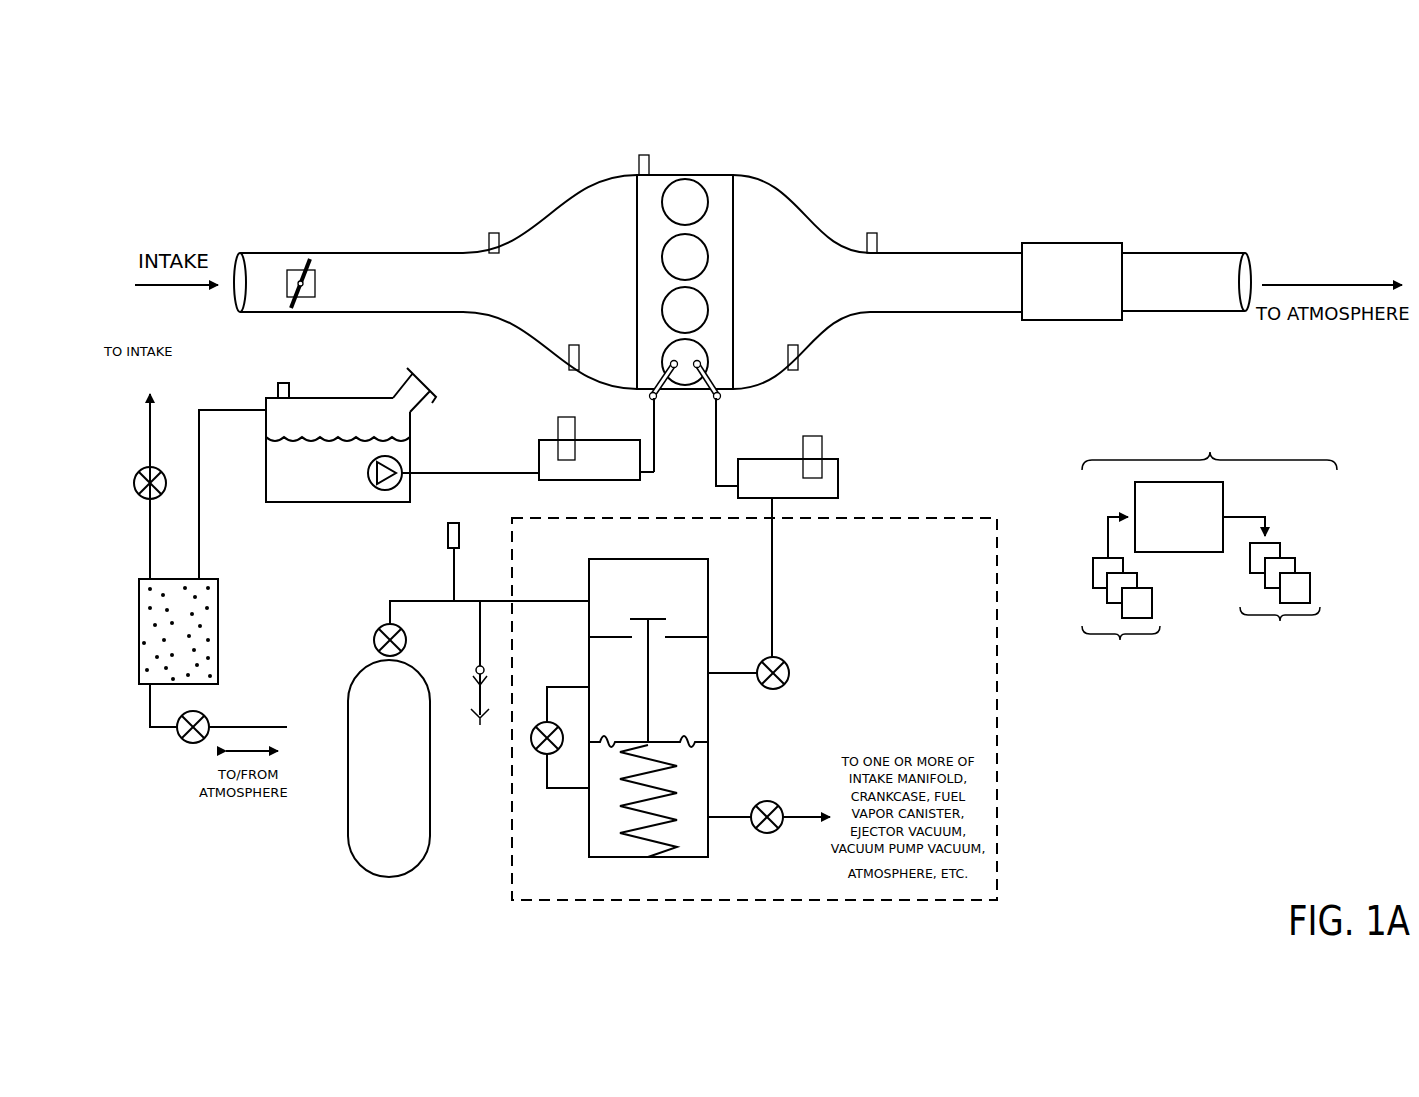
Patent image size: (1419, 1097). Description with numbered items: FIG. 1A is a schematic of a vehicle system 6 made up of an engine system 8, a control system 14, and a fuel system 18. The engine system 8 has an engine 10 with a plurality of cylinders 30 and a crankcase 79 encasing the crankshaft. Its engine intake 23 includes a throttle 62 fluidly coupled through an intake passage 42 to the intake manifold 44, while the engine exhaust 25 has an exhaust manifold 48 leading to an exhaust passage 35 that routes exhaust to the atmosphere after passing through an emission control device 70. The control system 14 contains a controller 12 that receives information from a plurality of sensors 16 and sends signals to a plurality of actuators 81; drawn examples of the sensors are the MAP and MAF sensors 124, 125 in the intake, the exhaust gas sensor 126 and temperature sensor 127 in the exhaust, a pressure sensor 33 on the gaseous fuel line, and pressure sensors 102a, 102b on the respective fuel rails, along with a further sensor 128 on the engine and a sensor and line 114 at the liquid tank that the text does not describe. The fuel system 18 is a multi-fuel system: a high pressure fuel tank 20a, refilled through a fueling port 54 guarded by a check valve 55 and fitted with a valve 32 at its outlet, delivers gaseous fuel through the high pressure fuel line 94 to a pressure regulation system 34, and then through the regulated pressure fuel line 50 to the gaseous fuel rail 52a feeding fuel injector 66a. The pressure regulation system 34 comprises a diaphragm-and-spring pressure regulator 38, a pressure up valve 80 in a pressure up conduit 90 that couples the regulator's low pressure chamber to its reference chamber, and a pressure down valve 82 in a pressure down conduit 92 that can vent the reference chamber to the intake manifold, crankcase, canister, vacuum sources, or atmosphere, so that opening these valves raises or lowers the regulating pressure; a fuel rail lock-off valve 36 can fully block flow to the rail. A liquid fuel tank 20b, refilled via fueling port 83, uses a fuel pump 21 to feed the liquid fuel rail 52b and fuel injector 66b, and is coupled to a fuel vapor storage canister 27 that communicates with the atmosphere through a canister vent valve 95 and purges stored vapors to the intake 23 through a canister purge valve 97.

The vehicle system 6 is at (188, 132).
The engine system 8 is at (858, 141).
The engine 10 is at (722, 160).
The controller 12 is at (1179, 517).
The control system 14 is at (1209, 438).
The sensors 16 is at (1122, 598).
The fuel system 18 is at (219, 858).
The high pressure fuel tank 20a is at (389, 768).
The fuel tank 20b is at (266, 466).
The fuel pump 21 is at (368, 473).
The engine intake 23 is at (440, 232).
The engine exhaust 25 is at (1083, 190).
The fuel vapor storage canister 27 is at (139, 626).
The cylinders 30 is at (703, 198).
The tank valve 32 is at (374, 640).
The pressure sensor 33 is at (454, 523).
The pressure regulation system 34 is at (866, 518).
The exhaust passage 35 is at (1198, 253).
The fuel rail lock-off valve 36 is at (785, 660).
The pressure regulator 38 is at (738, 731).
The intake passage 42 is at (348, 313).
The intake manifold 44 is at (594, 283).
The exhaust manifold 48 is at (801, 283).
The regulated pressure fuel line 50 is at (772, 568).
The fuel rail 52a is at (788, 558).
The fuel rail 52b is at (528, 460).
The fueling port 54 is at (475, 720).
The check valve 55 is at (476, 666).
The throttle 62 is at (315, 290).
The fuel injector 66a is at (719, 395).
The fuel injector 66b is at (652, 395).
The emission control device 70 is at (1072, 281).
The crankcase 79 is at (733, 276).
The pressure up valve 80 is at (534, 750).
The actuators 81 is at (1276, 589).
The pressure down valve 82 is at (775, 802).
The fueling port 83 is at (418, 382).
The pressure up conduit 90 is at (568, 687).
The pressure down conduit 92 is at (722, 820).
The high pressure fuel line 94 is at (538, 600).
The canister vent valve 95 is at (180, 742).
The canister purge valve 97 is at (137, 493).
The pressure sensor 102a is at (815, 436).
The pressure sensor 102b is at (566, 417).
The vapor line / sensor 114 is at (279, 388).
The MAP sensor 124 is at (499, 244).
The MAF sensor 125 is at (569, 351).
The exhaust gas sensor 126 is at (798, 352).
The temperature sensor 127 is at (867, 244).
The engine sensor 128 is at (649, 166).